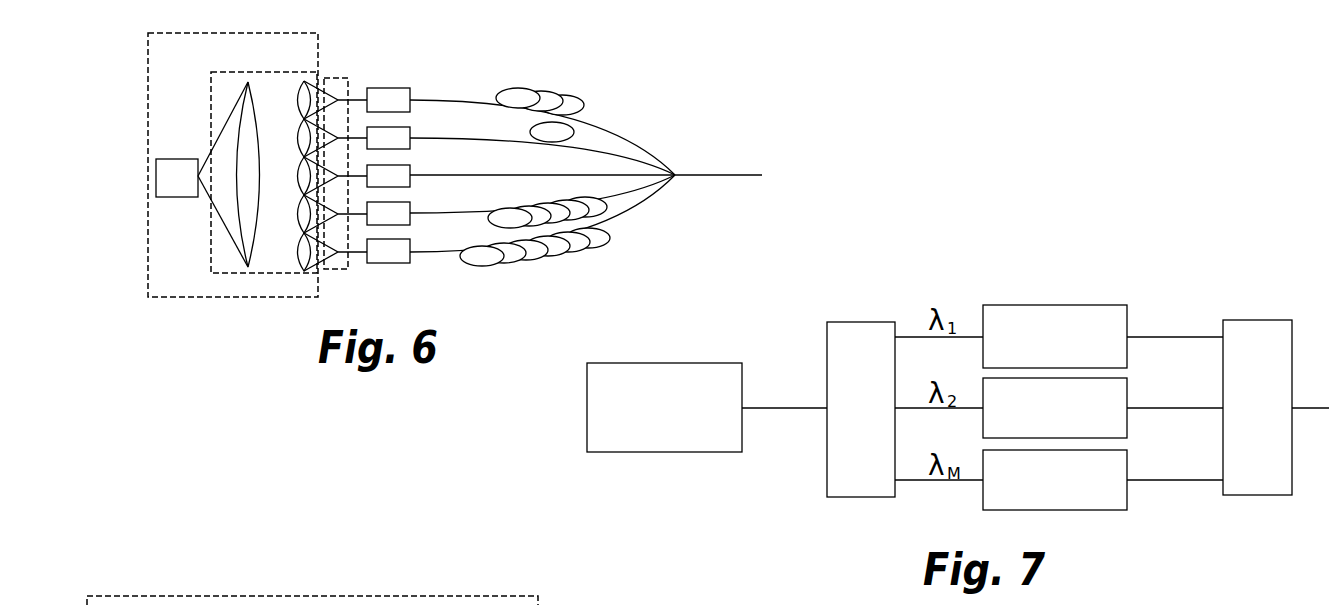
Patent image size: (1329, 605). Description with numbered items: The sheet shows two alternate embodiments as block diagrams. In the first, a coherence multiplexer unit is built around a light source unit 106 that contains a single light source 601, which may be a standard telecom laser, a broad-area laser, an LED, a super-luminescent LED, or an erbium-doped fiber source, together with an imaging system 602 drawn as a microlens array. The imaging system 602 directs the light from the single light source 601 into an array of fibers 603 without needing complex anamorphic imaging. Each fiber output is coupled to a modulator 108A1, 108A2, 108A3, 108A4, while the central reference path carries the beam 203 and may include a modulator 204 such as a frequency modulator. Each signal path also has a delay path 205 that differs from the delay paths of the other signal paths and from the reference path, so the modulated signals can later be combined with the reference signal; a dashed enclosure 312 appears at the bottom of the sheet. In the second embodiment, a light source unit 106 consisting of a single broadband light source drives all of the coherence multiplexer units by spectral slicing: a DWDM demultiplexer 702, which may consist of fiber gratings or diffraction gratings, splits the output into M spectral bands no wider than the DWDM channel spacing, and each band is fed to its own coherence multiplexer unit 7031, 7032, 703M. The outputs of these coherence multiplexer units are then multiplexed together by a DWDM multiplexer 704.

In FIG. 6, the light source unit 106 is at (224, 301).
In FIG. 7, the light source unit 106 is at (664, 397).
In FIG. 6, the single light source 601 is at (156, 176).
In FIG. 6, the imaging system 602 is at (278, 55).
In FIG. 6, the array of fibers 603 is at (339, 77).
In FIG. 6, the modulator 108A1 is at (382, 87).
In FIG. 6, the modulator 108A2 is at (412, 127).
In FIG. 6, the modulator 108A3 is at (412, 203).
In FIG. 6, the modulator 108A4 is at (412, 240).
In FIG. 6, the modulator 204 is at (412, 165).
In FIG. 6, the reference beam 203 is at (586, 166).
In FIG. 6, the delay path 205 is at (535, 163).
In FIG. 6, the dashed enclosure 312 is at (319, 594).
In FIG. 7, the DWDM demultiplexer 702 is at (861, 397).
In FIG. 7, the coherence multiplexer unit 7031 is at (1129, 304).
In FIG. 7, the coherence multiplexer unit 7032 is at (1129, 378).
In FIG. 7, the coherence multiplexer unit 703M is at (1129, 449).
In FIG. 7, the DWDM multiplexer 704 is at (1257, 394).